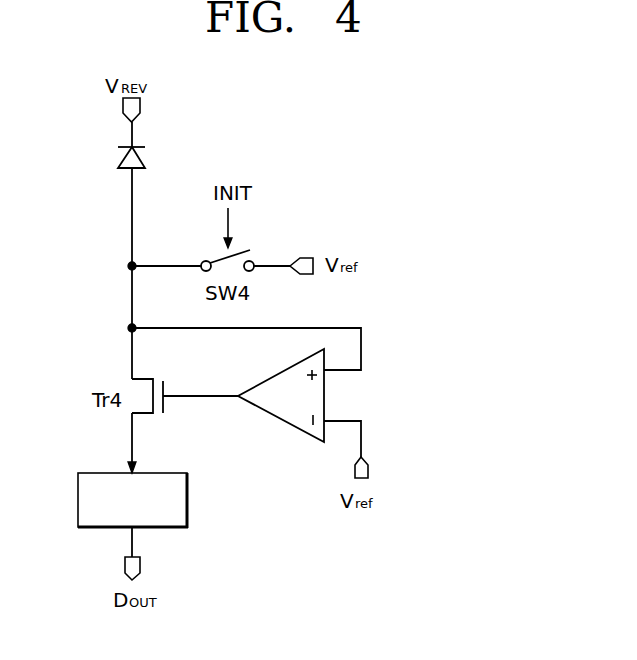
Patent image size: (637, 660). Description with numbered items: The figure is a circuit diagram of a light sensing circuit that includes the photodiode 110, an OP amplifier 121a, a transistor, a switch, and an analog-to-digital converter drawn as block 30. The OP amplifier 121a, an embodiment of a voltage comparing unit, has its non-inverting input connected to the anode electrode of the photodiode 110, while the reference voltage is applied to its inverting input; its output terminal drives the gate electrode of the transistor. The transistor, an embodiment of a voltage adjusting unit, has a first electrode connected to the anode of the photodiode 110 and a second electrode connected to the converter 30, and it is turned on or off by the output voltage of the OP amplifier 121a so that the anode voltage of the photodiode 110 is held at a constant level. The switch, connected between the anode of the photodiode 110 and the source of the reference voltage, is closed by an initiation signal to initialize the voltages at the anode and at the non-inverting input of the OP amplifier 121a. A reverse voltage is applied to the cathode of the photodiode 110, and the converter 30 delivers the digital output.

The photodiode 110 is at (143, 157).
The analog-to-digital converter (ADC) 30 is at (158, 473).
The OP amplifier 121a is at (283, 423).